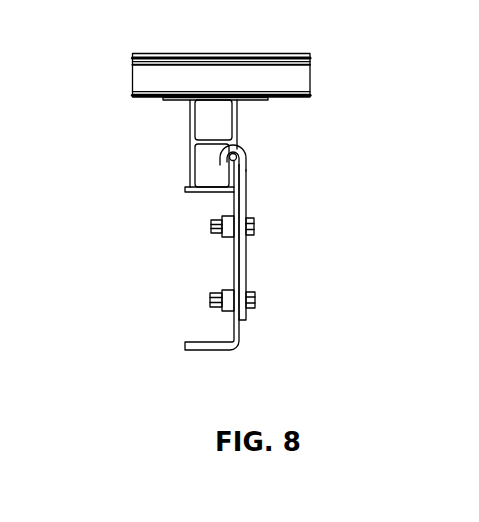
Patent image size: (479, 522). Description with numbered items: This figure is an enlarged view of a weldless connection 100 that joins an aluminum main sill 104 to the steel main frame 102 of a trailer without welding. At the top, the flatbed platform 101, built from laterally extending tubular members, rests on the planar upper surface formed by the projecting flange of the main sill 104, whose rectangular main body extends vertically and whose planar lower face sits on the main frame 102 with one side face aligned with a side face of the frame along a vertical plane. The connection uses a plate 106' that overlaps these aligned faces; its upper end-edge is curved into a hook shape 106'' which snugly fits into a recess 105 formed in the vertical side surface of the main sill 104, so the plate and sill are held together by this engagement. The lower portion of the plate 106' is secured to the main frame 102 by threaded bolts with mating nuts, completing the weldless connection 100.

The weldless connection 100 is at (273, 245).
The flatbed platform 101 is at (241, 69).
The main frame 102 is at (195, 353).
The main sill 104 is at (248, 112).
The recess 105 is at (212, 163).
The plate 106' is at (332, 241).
The hook shape 106'' is at (314, 131).